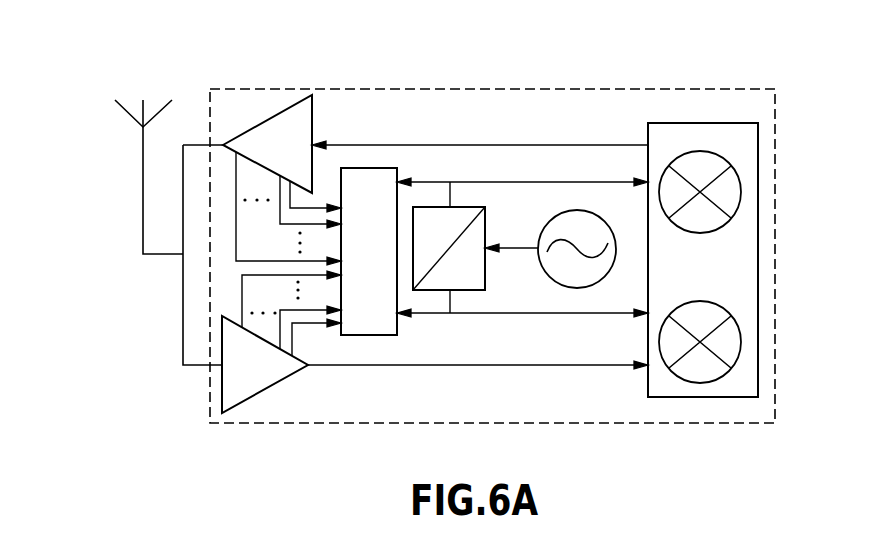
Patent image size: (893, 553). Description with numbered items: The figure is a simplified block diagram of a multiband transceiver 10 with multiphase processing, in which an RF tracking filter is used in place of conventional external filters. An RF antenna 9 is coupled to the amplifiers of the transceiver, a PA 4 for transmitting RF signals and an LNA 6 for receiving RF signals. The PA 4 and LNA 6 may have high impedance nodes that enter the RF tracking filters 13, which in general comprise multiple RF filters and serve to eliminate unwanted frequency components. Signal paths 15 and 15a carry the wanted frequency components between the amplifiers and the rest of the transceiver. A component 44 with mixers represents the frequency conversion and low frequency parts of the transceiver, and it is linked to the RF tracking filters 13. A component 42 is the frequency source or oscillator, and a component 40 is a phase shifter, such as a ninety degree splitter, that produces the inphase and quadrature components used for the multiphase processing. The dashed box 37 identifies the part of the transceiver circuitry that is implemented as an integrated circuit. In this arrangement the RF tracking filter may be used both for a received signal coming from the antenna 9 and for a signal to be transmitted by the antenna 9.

The multiband transceiver 10 is at (573, 62).
The dashed box 37 is at (450, 89).
The RF antenna 9 is at (125, 113).
The PA 4 is at (312, 137).
The LNA 6 is at (222, 392).
The RF tracking filters 13 is at (365, 335).
The signal path 15 is at (508, 365).
The signal path 15a is at (480, 145).
The phase shifter 40 is at (485, 218).
The frequency source/oscillator 42 is at (573, 288).
The component with mixers 44 is at (648, 383).